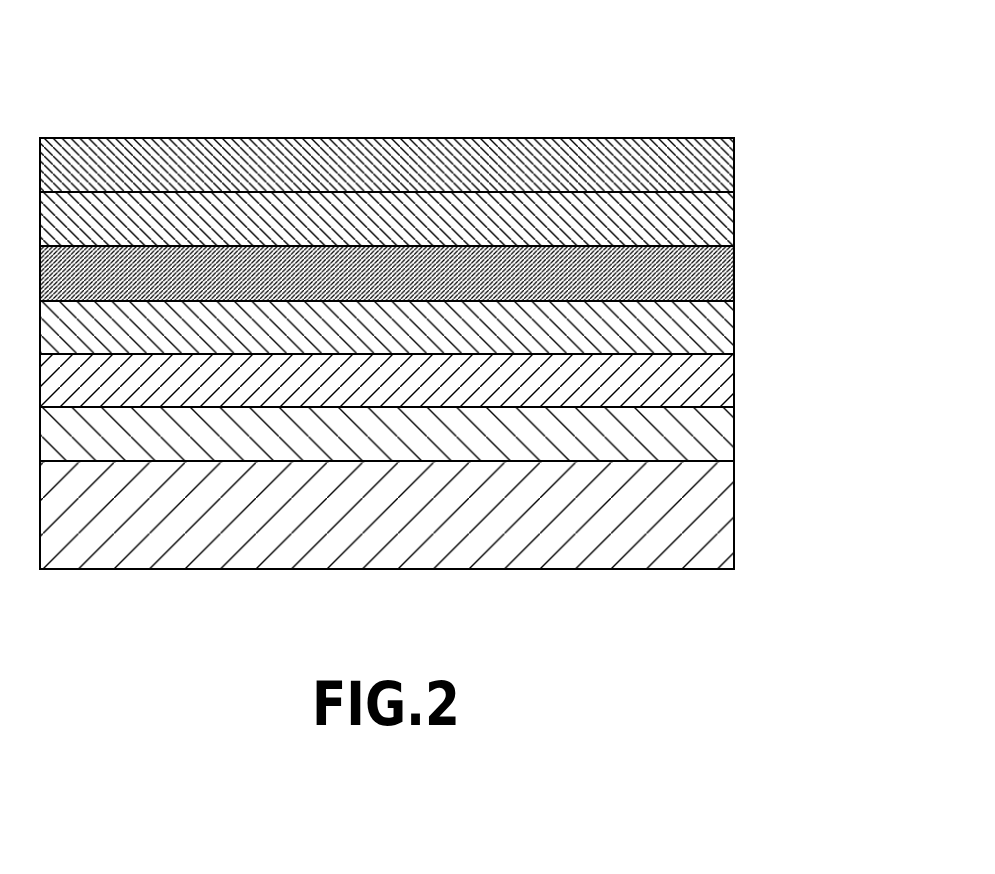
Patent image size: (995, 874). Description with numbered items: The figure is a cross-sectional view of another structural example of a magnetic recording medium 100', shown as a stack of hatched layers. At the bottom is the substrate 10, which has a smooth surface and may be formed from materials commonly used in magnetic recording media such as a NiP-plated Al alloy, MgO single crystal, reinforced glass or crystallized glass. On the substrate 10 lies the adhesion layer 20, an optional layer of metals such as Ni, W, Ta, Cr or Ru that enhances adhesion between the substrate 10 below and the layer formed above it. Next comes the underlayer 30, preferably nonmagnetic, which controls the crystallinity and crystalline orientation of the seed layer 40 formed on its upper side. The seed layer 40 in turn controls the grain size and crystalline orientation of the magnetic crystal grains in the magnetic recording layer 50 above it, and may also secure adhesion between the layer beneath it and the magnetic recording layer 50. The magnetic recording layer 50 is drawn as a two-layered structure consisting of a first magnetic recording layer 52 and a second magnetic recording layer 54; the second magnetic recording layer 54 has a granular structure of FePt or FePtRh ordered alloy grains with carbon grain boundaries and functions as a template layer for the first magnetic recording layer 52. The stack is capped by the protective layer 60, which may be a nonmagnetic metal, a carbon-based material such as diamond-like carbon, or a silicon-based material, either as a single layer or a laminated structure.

The magnetic recording medium 100' is at (401, 291).
The substrate 10 is at (725, 515).
The adhesion layer 20 is at (725, 433).
The underlayer 30 is at (725, 379).
The seed layer 40 is at (725, 326).
The magnetic recording layer 50 is at (803, 197).
The first magnetic recording layer 52 is at (728, 218).
The second magnetic recording layer 54 is at (728, 273).
The protective layer 60 is at (725, 163).